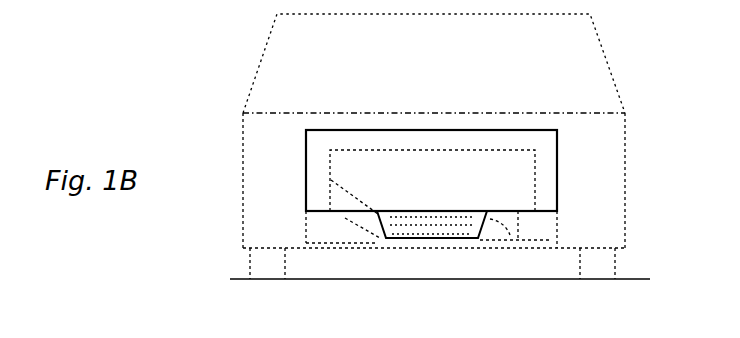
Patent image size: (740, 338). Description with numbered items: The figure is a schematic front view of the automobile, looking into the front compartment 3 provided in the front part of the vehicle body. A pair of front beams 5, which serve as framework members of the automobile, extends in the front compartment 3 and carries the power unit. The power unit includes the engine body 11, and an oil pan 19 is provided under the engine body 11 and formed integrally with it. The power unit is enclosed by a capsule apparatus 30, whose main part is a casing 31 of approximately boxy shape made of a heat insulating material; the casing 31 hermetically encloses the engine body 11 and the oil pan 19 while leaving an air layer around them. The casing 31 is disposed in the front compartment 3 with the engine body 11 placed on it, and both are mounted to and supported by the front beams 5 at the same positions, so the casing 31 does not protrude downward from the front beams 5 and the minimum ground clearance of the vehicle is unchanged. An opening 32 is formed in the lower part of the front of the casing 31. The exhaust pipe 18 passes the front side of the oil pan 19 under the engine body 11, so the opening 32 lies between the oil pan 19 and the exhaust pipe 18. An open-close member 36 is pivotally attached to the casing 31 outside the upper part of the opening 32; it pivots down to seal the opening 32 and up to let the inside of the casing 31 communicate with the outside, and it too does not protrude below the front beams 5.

The front compartment 3 is at (289, 130).
The front beams 5 is at (323, 250).
The engine body 11 is at (485, 150).
The exhaust pipe 18 is at (488, 243).
The oil pan 19 is at (450, 243).
The capsule apparatus 30 is at (566, 148).
The casing 31 is at (428, 130).
The opening 32 is at (380, 267).
The open-close member 36 is at (389, 248).